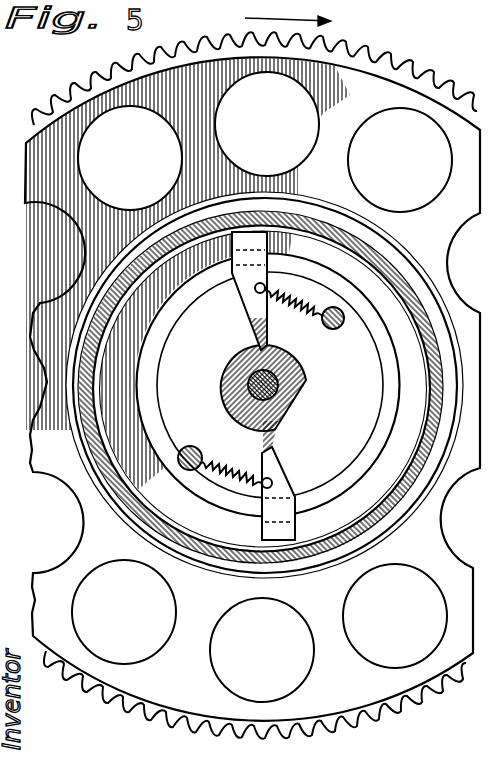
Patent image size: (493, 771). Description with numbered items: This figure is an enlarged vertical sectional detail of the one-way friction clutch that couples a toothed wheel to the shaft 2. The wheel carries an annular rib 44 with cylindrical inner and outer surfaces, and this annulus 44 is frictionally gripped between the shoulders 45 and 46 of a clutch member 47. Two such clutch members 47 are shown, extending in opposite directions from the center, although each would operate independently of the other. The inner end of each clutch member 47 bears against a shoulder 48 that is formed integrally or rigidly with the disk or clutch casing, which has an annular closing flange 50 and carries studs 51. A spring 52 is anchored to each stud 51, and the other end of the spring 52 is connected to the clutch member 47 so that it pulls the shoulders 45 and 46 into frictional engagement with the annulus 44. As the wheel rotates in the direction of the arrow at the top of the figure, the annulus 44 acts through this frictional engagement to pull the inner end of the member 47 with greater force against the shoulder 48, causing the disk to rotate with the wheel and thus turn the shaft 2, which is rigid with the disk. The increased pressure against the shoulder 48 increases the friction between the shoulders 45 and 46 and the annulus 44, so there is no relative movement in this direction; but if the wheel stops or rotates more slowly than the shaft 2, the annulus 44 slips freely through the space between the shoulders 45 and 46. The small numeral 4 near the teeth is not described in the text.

The shaft 2 is at (276, 384).
The sprocket wheel 4 is at (406, 678).
The annular rib 44 is at (380, 400).
The shoulder 45 is at (294, 291).
The shoulder 46 is at (270, 266).
The clutch member 47 is at (247, 307).
The shoulder 48 is at (290, 347).
The annular closing flange 50 is at (370, 253).
The stud 51 is at (345, 316).
The spring 52 is at (274, 306).